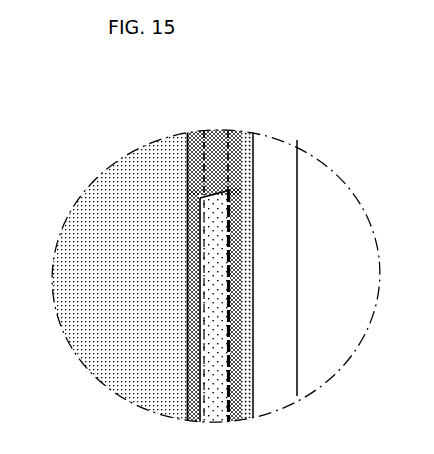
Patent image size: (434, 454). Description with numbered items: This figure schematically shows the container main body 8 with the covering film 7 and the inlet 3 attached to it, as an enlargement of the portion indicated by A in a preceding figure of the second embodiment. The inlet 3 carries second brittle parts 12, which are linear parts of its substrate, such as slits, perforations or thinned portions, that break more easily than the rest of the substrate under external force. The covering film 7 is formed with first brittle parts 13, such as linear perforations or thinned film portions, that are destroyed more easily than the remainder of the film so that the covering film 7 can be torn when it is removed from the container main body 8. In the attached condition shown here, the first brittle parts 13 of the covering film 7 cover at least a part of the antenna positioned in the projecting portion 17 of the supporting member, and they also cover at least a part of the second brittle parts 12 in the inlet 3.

The enlarged portion A is at (285, 133).
The first brittle parts 13 is at (207, 142).
The second brittle parts 12 is at (205, 205).
The covering film 7 is at (299, 225).
The container main body 8 is at (253, 285).
The projecting portion 17 is at (240, 315).
The inlet 3 is at (238, 342).